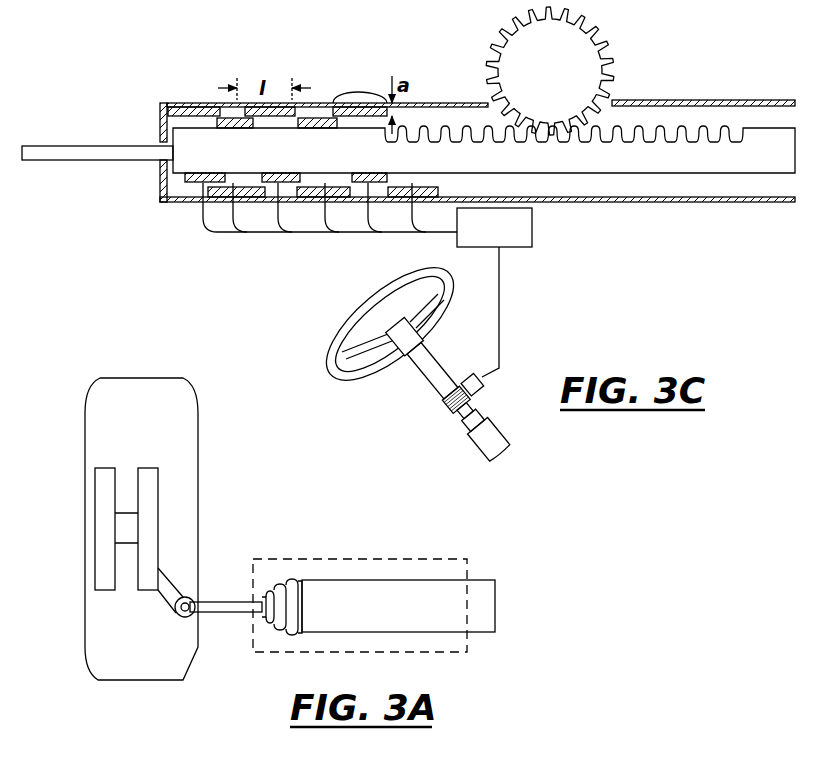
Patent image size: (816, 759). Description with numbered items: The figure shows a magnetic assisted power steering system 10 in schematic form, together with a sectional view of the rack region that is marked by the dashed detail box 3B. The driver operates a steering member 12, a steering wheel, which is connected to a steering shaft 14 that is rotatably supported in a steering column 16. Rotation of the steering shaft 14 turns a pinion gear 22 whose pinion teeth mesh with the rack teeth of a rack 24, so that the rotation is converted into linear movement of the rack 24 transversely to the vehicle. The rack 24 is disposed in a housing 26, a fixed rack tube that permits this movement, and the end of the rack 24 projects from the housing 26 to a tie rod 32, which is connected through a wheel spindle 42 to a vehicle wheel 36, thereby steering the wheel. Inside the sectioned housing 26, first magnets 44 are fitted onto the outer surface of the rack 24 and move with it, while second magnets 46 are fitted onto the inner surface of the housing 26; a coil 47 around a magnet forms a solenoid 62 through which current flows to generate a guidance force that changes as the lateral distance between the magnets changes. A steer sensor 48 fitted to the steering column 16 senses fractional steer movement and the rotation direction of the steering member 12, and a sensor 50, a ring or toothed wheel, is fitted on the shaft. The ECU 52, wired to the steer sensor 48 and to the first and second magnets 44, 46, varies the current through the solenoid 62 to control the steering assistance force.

In FIG. 3A, the steering system 10 is at (152, 358).
In FIG. 3C, the steering member 12 is at (340, 328).
In FIG. 3C, the steering shaft 14 is at (465, 425).
In FIG. 3C, the steering column 16 is at (490, 436).
In FIG. 3C, the pinion gear 22 is at (592, 56).
In FIG. 3C, the rack 24 is at (780, 170).
In FIG. 3C, the housing 26 is at (665, 101).
In FIG. 3A, the housing 26 is at (395, 632).
In FIG. 3C, the tie rod 32 is at (70, 147).
In FIG. 3A, the tie rod 32 is at (205, 600).
In FIG. 3A, the vehicle wheel 36 is at (95, 658).
In FIG. 3A, the wheel spindle 42 is at (100, 478).
In FIG. 3C, the first magnet 44 is at (234, 117).
In FIG. 3C, the second magnet 46 is at (183, 106).
In FIG. 3C, the coil 47 is at (163, 112).
In FIG. 3C, the steer sensor 48 is at (484, 386).
In FIG. 3C, the sensor 50 is at (445, 407).
In FIG. 3C, the ECU 52 is at (533, 240).
In FIG. 3C, the solenoid 62 is at (360, 89).
In FIG. 3A, the detail view region 3B is at (357, 560).